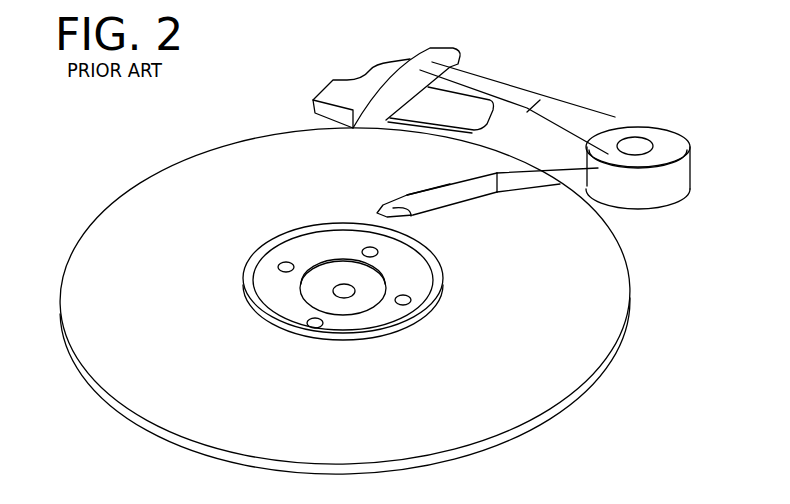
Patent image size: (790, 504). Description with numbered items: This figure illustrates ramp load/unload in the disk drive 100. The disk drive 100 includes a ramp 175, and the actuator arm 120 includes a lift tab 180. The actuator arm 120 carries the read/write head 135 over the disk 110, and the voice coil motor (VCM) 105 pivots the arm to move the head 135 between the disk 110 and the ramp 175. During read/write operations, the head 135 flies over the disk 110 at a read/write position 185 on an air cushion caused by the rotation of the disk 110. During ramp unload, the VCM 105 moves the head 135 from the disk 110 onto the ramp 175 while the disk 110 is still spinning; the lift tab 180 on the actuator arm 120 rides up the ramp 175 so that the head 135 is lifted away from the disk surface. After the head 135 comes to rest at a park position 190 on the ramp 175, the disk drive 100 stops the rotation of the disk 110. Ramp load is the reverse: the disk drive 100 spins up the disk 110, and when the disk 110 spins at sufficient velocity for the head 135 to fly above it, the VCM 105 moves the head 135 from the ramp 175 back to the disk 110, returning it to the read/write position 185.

The disk drive 100 is at (435, 143).
The voice coil motor 105 is at (658, 137).
The disk 110 is at (130, 200).
The actuator arm 120 is at (572, 113).
The read/write head 135 is at (374, 211).
The ramp 175 is at (332, 110).
The lift tab 180 is at (415, 217).
The read/write position 185 is at (421, 185).
The park position 190 is at (413, 60).